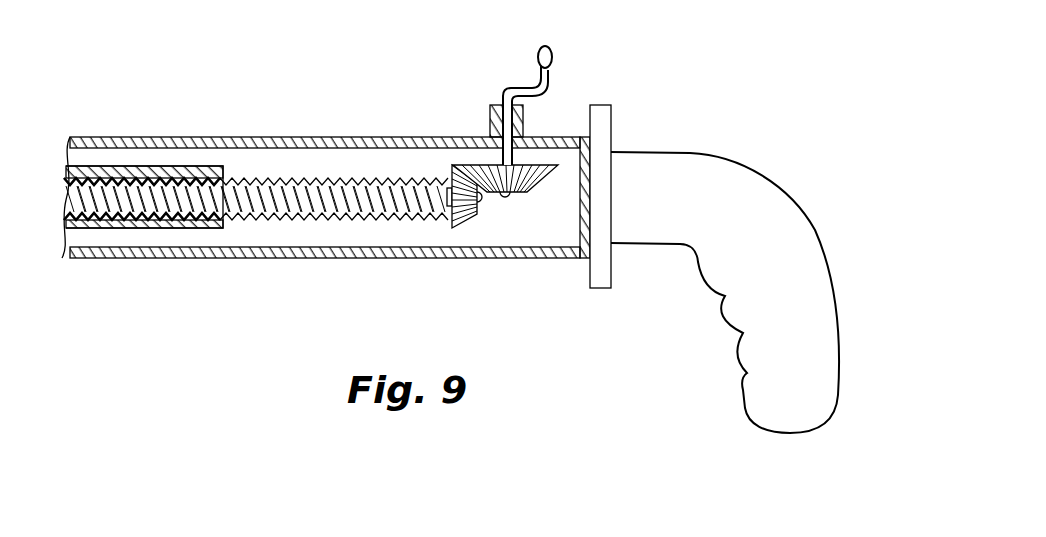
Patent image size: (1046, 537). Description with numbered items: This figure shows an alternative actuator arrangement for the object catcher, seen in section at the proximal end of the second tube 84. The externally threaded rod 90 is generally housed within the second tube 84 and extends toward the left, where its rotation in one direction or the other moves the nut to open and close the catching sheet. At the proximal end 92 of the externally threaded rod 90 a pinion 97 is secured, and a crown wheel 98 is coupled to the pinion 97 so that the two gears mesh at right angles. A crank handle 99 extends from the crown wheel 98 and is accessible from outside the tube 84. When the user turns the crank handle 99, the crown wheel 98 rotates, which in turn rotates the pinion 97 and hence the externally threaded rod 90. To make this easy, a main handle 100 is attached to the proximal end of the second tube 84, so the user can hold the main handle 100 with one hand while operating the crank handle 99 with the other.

The second tube 84 is at (175, 137).
The externally threaded rod 90 is at (252, 190).
The proximal end 92 is at (449, 180).
The pinion 97 is at (465, 225).
The crown wheel 98 is at (471, 165).
The crank handle 99 is at (553, 52).
The main handle 100 is at (735, 183).